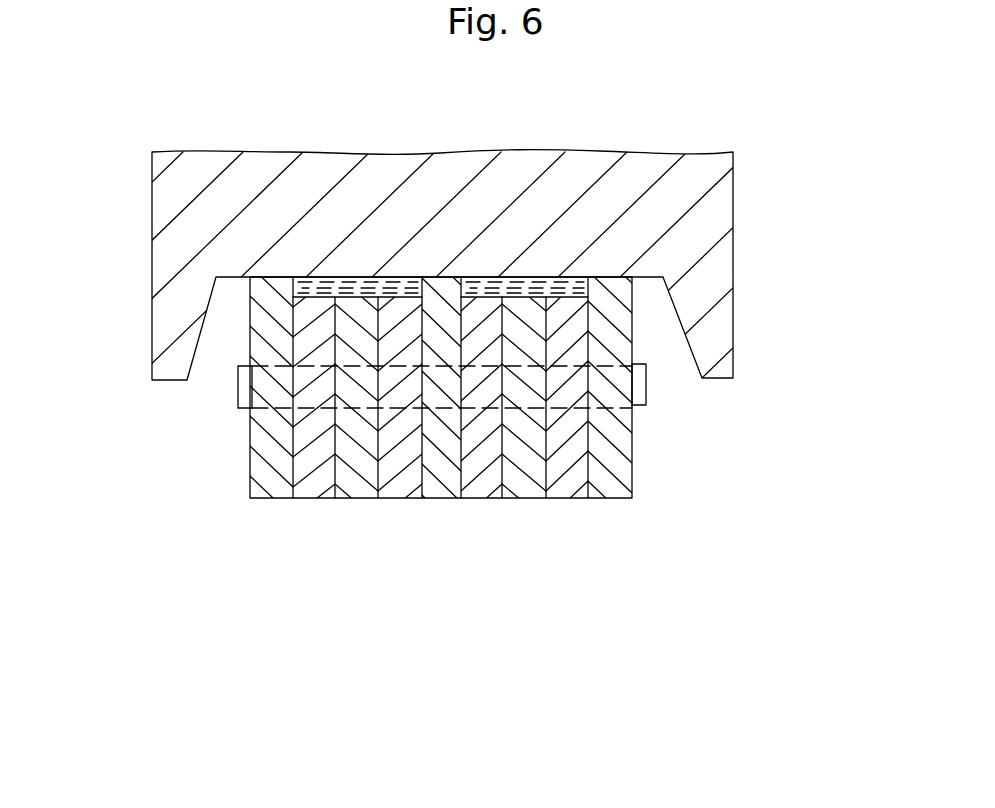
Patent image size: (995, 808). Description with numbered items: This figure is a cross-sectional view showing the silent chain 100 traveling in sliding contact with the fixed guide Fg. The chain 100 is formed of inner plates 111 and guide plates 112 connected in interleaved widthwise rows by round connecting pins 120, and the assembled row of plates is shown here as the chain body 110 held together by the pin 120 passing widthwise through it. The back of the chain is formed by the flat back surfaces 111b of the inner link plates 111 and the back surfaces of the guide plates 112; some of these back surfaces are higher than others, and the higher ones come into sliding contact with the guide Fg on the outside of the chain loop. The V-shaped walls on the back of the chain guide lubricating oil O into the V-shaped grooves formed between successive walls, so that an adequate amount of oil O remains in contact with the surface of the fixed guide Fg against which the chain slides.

The silent chain 100 is at (453, 380).
The pad body 110 is at (453, 356).
The inner plate 111 is at (390, 487).
The flat back surface 111b is at (395, 294).
The guide plate 112 is at (282, 488).
The round connecting pin 120 is at (407, 620).
The lubricating oil O is at (353, 278).
The fixed guide Fg is at (742, 193).